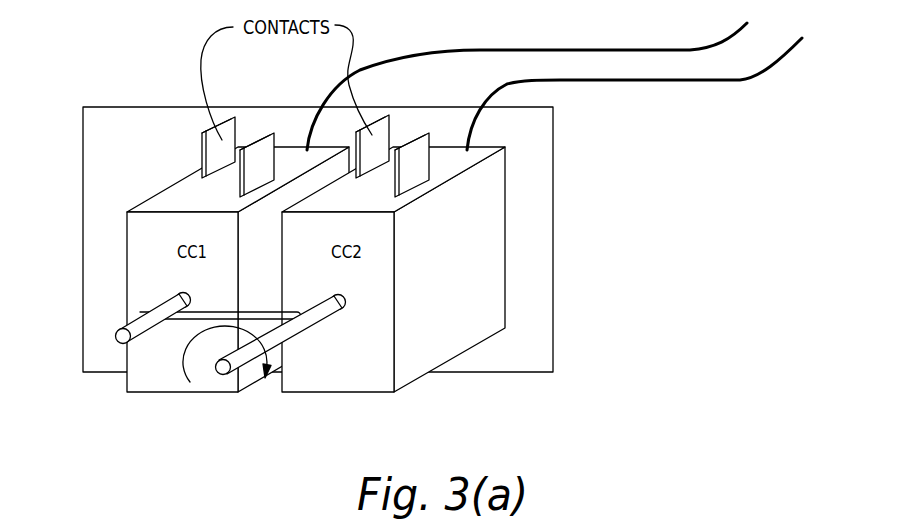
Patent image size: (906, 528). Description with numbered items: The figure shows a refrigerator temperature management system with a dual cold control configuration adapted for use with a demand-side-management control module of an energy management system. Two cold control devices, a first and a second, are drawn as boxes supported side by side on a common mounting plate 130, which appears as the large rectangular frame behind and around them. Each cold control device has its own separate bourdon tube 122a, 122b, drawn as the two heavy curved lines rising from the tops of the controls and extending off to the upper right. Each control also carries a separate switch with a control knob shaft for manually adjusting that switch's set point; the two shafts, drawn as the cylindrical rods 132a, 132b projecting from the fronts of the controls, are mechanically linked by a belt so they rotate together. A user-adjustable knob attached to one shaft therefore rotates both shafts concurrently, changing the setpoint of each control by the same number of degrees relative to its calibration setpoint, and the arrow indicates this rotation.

The common mounting plate 130 is at (530, 250).
The bourdon tube 122a is at (652, 84).
The bourdon tube 122b is at (563, 48).
The rod 132a is at (176, 302).
The rod 132b is at (327, 310).